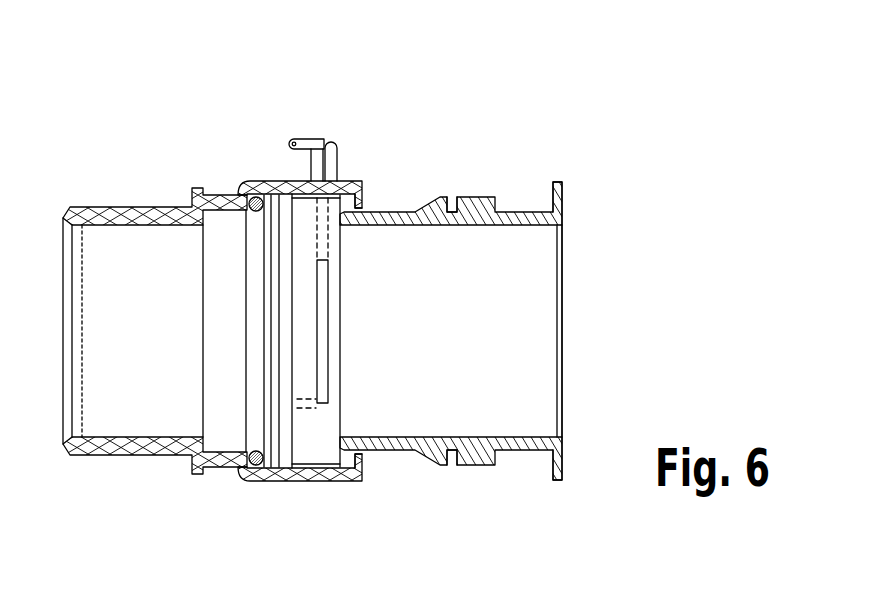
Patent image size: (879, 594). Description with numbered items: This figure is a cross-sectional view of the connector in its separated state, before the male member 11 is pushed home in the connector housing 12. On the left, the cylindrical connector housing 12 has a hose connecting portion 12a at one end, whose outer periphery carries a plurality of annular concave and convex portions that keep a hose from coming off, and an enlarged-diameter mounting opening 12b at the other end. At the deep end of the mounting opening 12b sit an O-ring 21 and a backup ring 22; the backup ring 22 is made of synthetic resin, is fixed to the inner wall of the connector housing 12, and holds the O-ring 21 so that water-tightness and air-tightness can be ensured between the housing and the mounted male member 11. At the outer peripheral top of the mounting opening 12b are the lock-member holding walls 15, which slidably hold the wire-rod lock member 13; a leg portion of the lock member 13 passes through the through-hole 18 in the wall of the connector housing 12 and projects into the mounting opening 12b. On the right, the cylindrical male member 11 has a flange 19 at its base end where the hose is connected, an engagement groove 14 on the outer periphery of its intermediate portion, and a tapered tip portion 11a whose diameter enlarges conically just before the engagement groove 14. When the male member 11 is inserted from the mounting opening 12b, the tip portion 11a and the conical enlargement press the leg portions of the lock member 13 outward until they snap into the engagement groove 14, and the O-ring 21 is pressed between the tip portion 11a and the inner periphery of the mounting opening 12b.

The male member 11 is at (496, 190).
The tip portion 11a is at (380, 453).
The connector housing 12 is at (214, 188).
The hose connecting portion 12a is at (120, 206).
The mounting opening 12b is at (374, 203).
The lock member 13 is at (315, 138).
The engagement groove 14 is at (451, 200).
The lock-member holding wall 15 is at (333, 162).
The through-hole 18 is at (320, 325).
The flange 19 is at (559, 184).
The O-ring 21 is at (250, 178).
The backup ring 22 is at (280, 178).